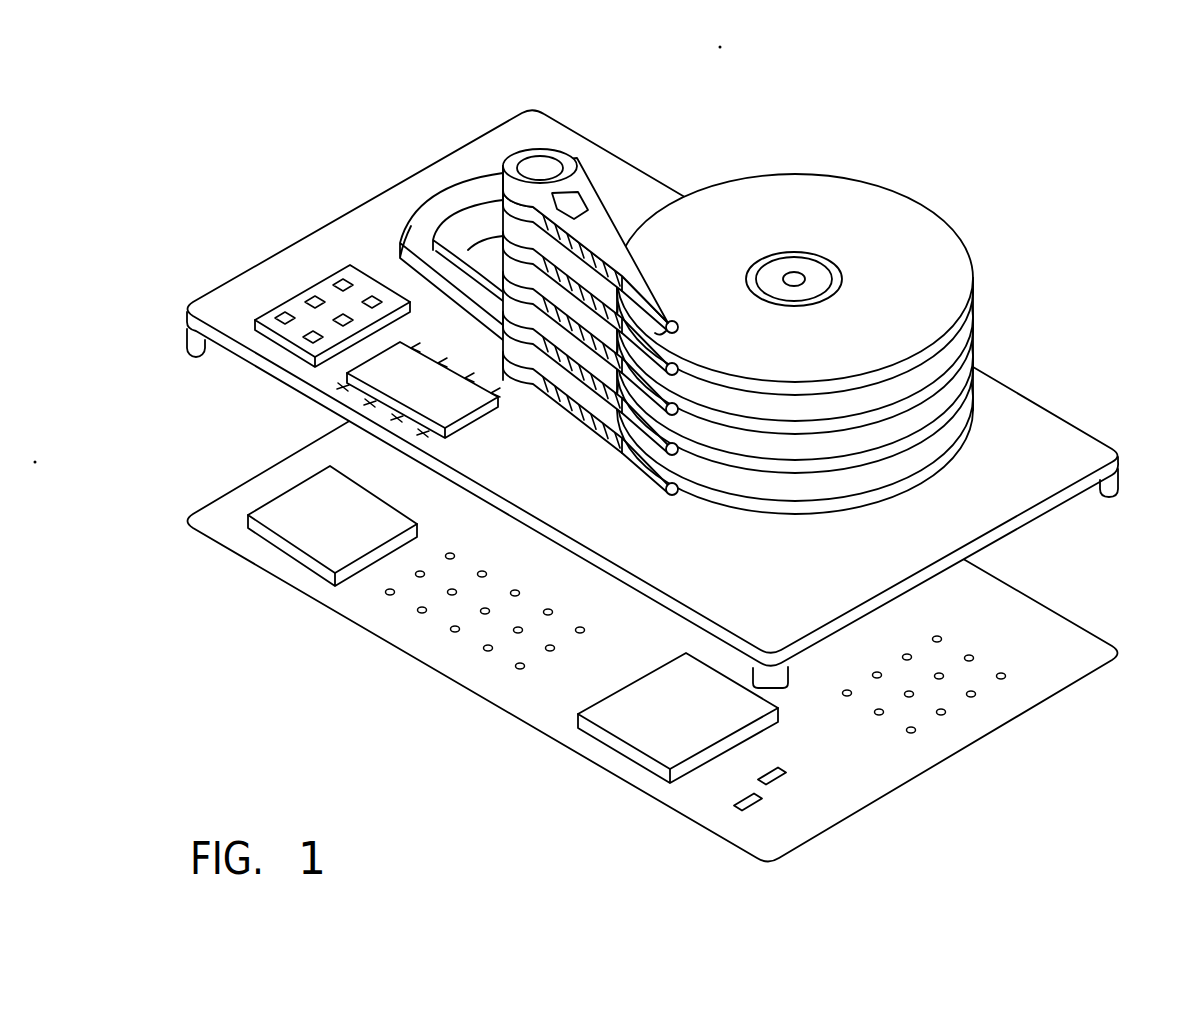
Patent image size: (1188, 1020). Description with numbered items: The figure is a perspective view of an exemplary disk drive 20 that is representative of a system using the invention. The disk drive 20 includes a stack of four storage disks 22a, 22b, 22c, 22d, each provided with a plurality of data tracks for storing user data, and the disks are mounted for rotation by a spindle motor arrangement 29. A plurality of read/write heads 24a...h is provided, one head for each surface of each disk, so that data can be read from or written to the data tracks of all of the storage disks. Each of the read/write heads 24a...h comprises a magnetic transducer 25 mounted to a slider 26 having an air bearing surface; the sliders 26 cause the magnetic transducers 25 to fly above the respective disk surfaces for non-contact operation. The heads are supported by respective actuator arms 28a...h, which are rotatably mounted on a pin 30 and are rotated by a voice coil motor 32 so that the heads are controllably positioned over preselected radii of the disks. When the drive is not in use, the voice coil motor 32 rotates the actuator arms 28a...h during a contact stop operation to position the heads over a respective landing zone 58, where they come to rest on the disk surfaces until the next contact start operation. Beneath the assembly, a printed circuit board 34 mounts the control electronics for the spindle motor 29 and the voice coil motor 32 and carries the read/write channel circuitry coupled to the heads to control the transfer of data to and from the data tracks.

The disk drive 20 is at (611, 444).
The storage disk 22a is at (950, 230).
The storage disk 22b is at (973, 320).
The storage disk 22c is at (973, 363).
The storage disk 22d is at (973, 420).
The read/write heads 24a...h is at (713, 300).
The magnetic transducer 25 is at (677, 332).
The slider 26 is at (684, 326).
The actuator arms 28a...h is at (653, 280).
The spindle motor arrangement 29 is at (794, 275).
The pin 30 is at (538, 163).
The voice coil motor 32 is at (445, 220).
The printed circuit board 34 is at (995, 736).
The landing zone 58 is at (827, 257).